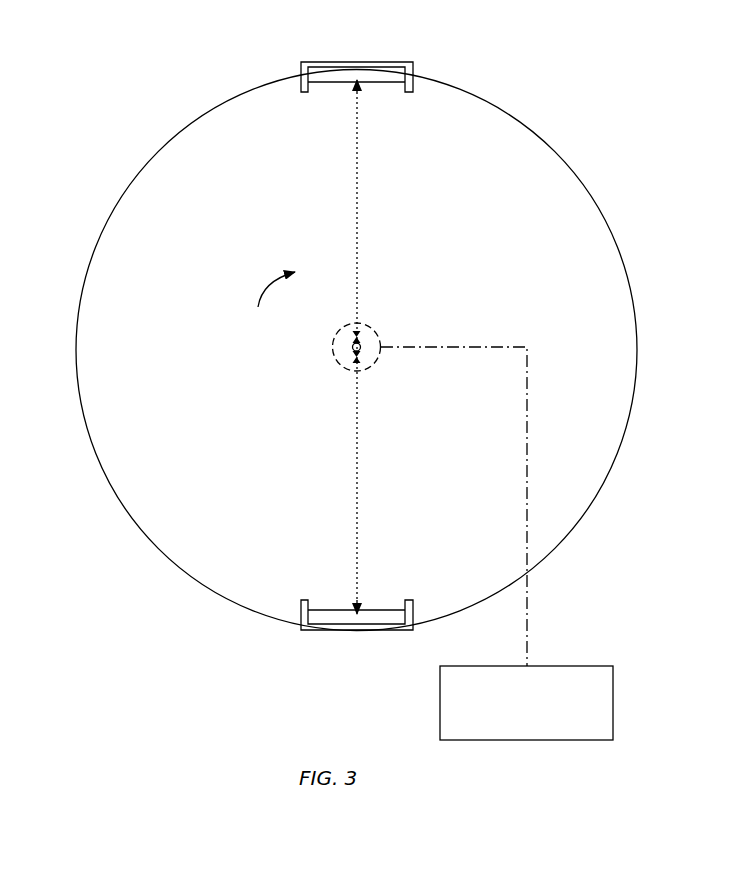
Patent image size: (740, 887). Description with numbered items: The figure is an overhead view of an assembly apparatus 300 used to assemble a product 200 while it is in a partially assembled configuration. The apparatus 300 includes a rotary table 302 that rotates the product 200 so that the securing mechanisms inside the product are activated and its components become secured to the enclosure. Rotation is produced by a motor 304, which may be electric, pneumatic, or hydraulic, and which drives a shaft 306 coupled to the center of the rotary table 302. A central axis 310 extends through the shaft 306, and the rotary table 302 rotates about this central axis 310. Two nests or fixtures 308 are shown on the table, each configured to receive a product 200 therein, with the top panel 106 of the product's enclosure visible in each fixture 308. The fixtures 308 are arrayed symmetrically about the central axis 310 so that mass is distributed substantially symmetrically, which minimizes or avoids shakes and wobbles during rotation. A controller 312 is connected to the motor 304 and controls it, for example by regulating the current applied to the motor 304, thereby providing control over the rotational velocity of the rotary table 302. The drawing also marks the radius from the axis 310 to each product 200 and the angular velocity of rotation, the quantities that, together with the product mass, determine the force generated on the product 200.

The assembly apparatus 300 is at (135, 38).
The rotary table 302 is at (142, 164).
The motor 304 is at (340, 365).
The shaft 306 is at (353, 343).
The fixtures 308 is at (383, 62).
The central axis 310 is at (362, 345).
The controller 312 is at (563, 666).
The product 200 is at (338, 82).
The top panel 106 is at (378, 82).